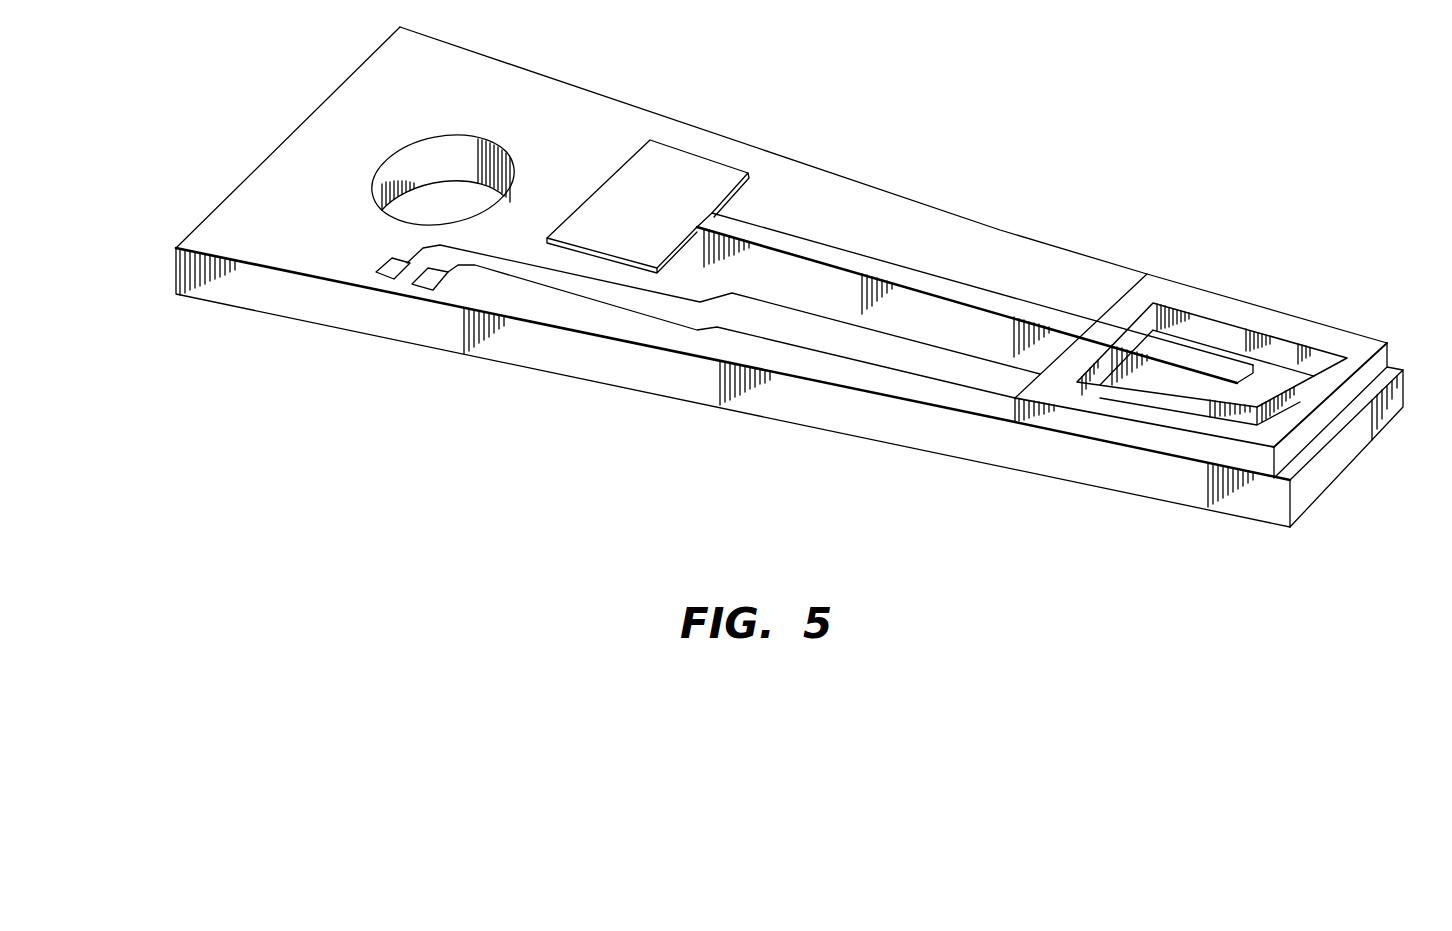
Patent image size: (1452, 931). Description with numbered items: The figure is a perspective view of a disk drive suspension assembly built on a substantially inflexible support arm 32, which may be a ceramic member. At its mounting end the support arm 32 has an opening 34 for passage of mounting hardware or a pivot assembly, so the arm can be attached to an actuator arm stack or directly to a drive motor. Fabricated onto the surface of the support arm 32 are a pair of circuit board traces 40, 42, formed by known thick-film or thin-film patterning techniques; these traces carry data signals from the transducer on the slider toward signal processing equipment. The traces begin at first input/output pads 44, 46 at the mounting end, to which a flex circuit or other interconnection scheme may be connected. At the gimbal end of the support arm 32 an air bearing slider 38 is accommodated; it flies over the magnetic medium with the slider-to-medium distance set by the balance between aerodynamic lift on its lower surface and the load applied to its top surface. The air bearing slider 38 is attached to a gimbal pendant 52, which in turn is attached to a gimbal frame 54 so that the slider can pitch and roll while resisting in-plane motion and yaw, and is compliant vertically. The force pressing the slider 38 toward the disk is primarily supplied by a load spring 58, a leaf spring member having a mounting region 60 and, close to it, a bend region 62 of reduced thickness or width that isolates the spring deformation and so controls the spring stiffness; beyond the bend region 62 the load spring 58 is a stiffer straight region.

The support arm 32 is at (771, 277).
The opening 34 is at (423, 163).
The air bearing slider 38 is at (1283, 410).
The circuit board trace 40 is at (580, 300).
The circuit board trace 42 is at (537, 264).
The first input/output pad 44 is at (387, 275).
The first input/output pad 46 is at (428, 283).
The gimbal pendant 52 is at (1275, 367).
The gimbal frame 54 is at (1192, 299).
The load spring 58 is at (1038, 308).
The mounting region 60 is at (692, 168).
The bend region 62 is at (820, 252).